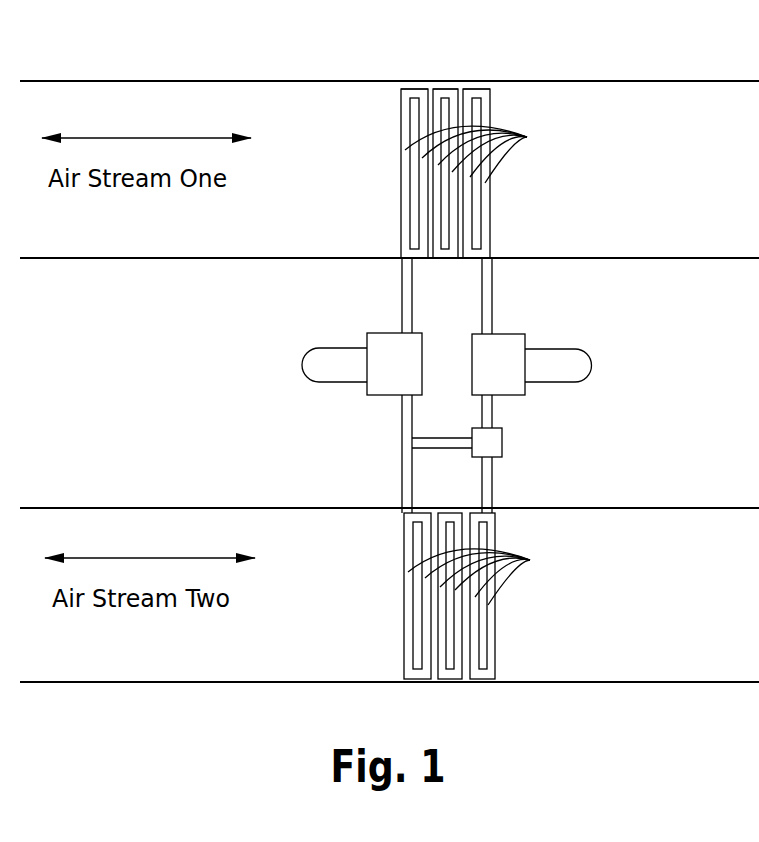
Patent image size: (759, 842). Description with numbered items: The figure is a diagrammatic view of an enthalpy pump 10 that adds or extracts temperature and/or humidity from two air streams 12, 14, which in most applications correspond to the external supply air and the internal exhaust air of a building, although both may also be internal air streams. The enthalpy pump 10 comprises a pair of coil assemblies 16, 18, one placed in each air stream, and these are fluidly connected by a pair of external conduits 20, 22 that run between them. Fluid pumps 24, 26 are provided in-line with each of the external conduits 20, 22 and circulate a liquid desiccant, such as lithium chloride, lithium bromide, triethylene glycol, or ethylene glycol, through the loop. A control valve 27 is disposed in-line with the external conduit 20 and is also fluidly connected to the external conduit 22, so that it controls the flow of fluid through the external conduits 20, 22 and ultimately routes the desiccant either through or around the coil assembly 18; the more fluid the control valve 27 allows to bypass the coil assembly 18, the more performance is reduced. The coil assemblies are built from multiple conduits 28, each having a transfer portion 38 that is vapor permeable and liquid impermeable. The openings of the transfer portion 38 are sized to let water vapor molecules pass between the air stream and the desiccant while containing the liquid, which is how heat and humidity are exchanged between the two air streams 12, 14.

The enthalpy pump 10 is at (461, 59).
The air stream 12 is at (686, 79).
The air stream 14 is at (687, 506).
The coil assembly 16 is at (400, 185).
The coil assembly 18 is at (403, 591).
The external conduit 20 is at (492, 301).
The external conduit 22 is at (402, 295).
The fluid pump 24 is at (526, 345).
The fluid pump 26 is at (367, 339).
The control valve 27 is at (490, 445).
The conduits 28 is at (407, 88).
The transfer portion 38 is at (482, 365).